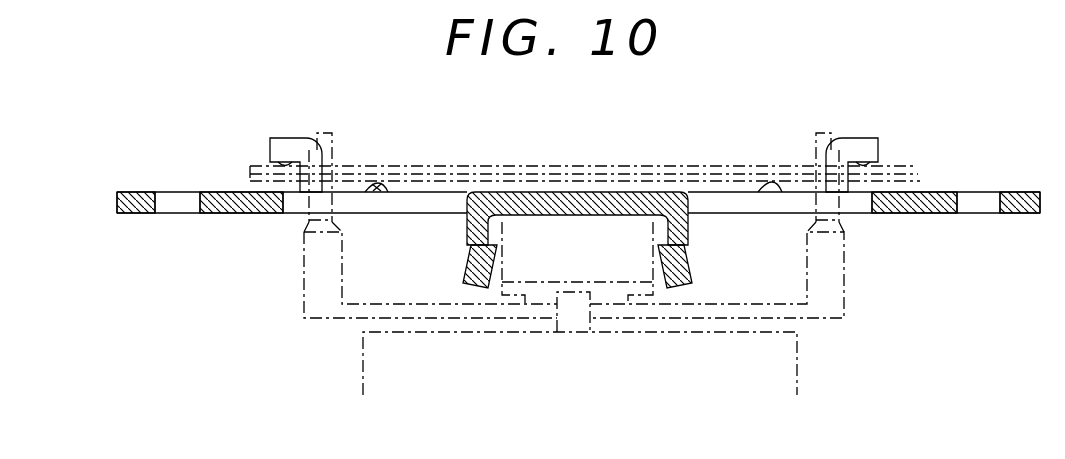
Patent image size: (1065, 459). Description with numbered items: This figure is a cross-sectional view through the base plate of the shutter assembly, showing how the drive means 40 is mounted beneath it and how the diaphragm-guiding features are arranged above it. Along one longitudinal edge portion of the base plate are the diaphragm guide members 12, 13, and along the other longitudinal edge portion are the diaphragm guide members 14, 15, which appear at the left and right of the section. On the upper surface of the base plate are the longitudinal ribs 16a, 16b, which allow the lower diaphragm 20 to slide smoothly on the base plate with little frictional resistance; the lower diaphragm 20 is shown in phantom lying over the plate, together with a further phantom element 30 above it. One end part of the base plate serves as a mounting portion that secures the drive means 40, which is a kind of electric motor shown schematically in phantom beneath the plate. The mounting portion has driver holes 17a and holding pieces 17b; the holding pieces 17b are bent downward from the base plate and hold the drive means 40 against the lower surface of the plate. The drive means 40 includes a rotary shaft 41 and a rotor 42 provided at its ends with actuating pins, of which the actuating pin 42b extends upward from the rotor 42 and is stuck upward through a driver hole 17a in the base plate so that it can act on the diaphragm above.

The lower diaphragm 20 is at (928, 183).
The lead frame 30 is at (900, 166).
The diaphragm guide member 15 is at (285, 140).
The diaphragm guide member 14 is at (247, 128).
The diaphragm guide member 13 is at (855, 140).
The diaphragm guide member 12 is at (892, 129).
The longitudinal rib 16a is at (768, 190).
The longitudinal rib 16b is at (380, 183).
The hole 17a is at (437, 192).
The holding piece 17b is at (497, 258).
The actuating pin 42b is at (338, 140).
The rotor 42 is at (357, 322).
The rotary shaft 41 is at (590, 322).
The drive means 40 is at (807, 320).